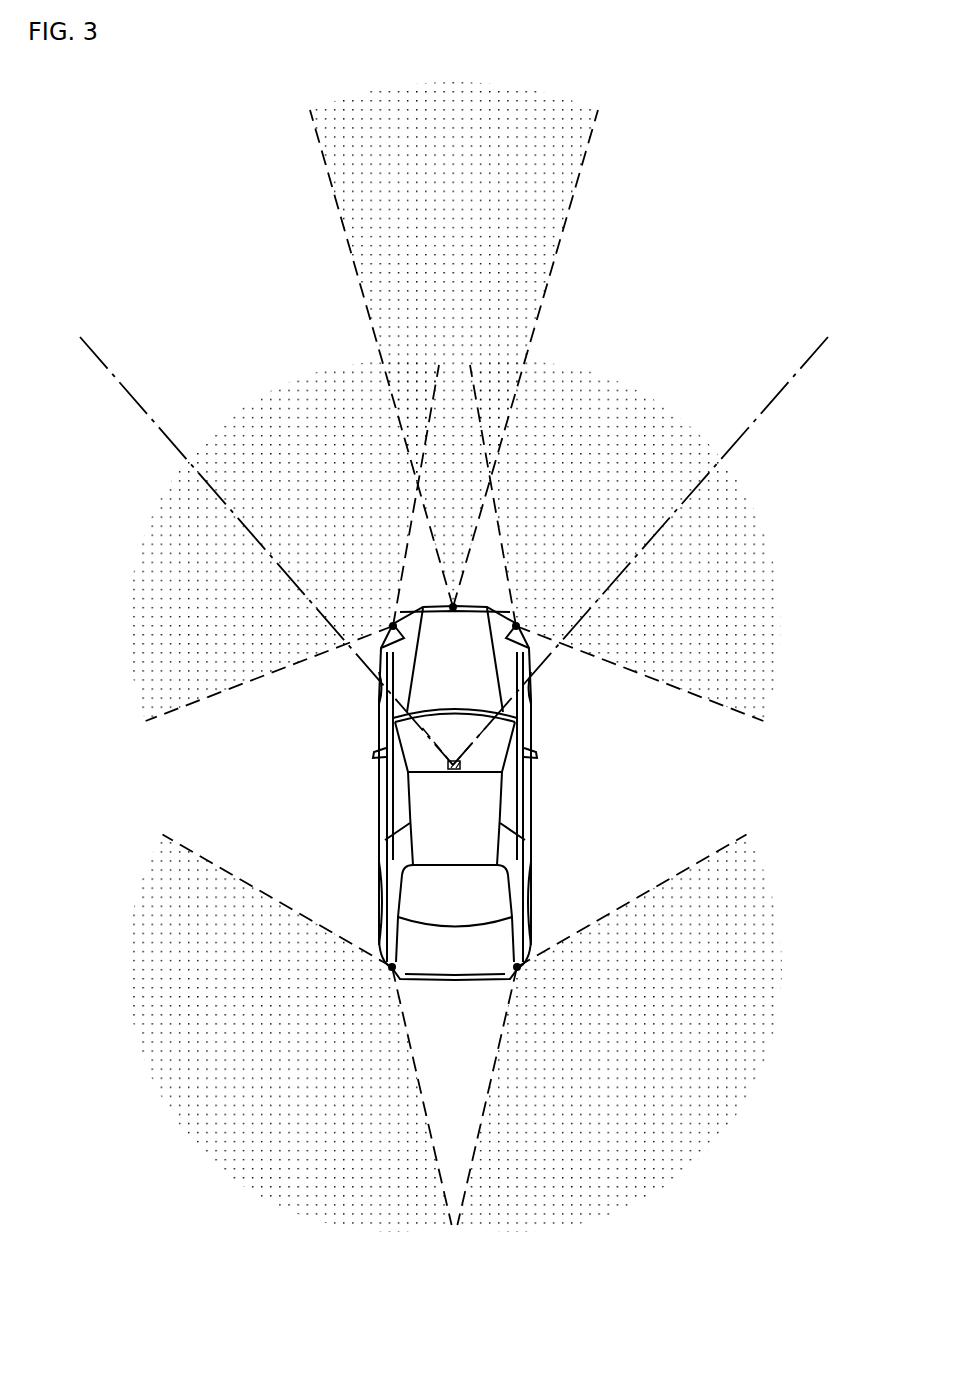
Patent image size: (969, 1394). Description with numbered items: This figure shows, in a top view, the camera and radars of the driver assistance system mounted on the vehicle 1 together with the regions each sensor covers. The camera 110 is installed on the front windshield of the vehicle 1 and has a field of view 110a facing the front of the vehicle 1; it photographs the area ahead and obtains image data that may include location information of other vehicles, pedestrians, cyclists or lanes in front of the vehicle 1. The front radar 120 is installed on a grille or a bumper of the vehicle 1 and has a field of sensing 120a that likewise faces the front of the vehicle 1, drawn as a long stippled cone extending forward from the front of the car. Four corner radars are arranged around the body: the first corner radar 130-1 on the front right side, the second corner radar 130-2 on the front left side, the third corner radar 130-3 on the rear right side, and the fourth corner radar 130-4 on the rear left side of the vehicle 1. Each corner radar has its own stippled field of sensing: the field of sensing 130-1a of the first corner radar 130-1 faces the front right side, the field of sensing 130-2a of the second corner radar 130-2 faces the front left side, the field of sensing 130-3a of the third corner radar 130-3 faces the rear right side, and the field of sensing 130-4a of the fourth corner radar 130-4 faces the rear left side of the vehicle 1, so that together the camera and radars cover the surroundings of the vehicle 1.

The vehicle 1 is at (540, 784).
The camera 110 is at (454, 771).
The field of view 110a is at (787, 387).
The front radar 120 is at (456, 606).
The field of sensing 120a is at (542, 223).
The first corner radar 130-1 is at (517, 625).
The second corner radar 130-2 is at (392, 625).
The third corner radar 130-3 is at (520, 970).
The fourth corner radar 130-4 is at (390, 970).
The field of sensing 130-1a is at (655, 418).
The field of sensing 130-2a is at (252, 418).
The field of sensing 130-3a is at (728, 1110).
The field of sensing 130-4a is at (180, 1112).